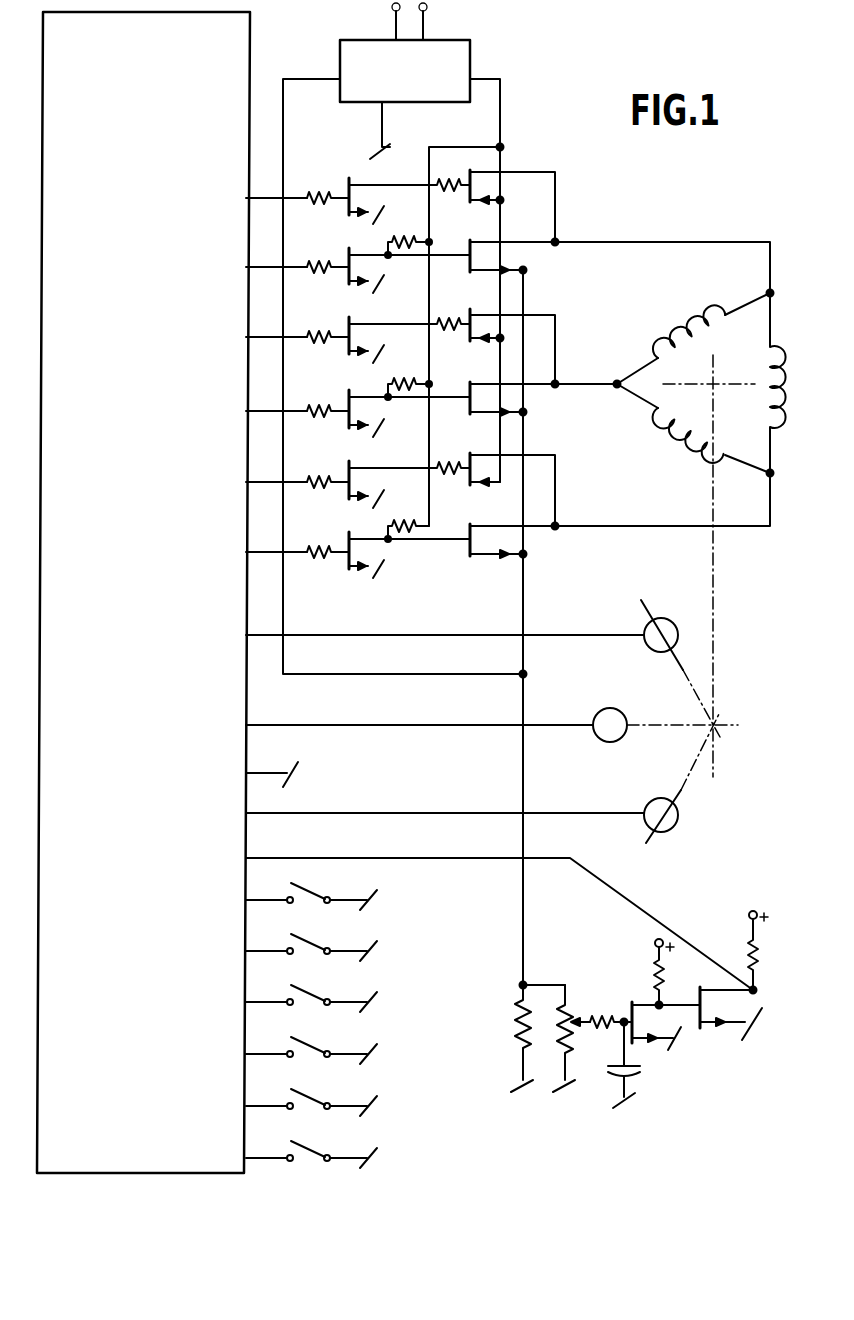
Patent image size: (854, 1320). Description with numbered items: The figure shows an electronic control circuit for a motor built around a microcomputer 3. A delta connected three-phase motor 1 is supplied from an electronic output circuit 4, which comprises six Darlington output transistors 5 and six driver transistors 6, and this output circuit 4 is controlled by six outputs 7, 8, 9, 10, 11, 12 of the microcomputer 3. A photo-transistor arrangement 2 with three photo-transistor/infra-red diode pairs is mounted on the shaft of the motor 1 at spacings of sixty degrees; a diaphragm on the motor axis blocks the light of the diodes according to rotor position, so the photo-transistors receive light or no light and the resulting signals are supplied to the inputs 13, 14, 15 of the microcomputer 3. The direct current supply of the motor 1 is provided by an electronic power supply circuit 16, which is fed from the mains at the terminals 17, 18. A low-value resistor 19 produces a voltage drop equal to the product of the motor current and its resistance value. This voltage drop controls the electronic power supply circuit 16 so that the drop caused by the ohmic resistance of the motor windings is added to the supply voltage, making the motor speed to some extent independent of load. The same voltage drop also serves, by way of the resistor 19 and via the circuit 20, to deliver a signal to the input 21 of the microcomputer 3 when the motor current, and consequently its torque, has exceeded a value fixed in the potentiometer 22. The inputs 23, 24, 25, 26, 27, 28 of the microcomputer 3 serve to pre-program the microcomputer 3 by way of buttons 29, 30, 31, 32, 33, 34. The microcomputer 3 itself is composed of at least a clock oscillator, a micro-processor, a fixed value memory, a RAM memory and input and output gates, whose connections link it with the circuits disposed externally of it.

The three-phase motor 1 is at (700, 534).
The photo-transistor arrangement 2 is at (665, 721).
The microcomputer 3 is at (238, 45).
The electronic output circuit 4 is at (405, 532).
The Darlington output transistors 5 is at (448, 463).
The driver transistors 6 is at (388, 371).
The output 7 is at (267, 198).
The output 8 is at (267, 267).
The output 9 is at (267, 337).
The output 10 is at (259, 411).
The output 11 is at (259, 482).
The output 12 is at (259, 552).
The input 13 is at (427, 635).
The input 14 is at (402, 725).
The input 15 is at (427, 813).
The electronic power supply circuit 16 is at (349, 45).
The terminal 17 is at (392, 8).
The terminal 18 is at (428, 8).
The low-value resistor 19 is at (505, 1030).
The circuit 20 is at (644, 1009).
The input 21 is at (482, 917).
The potentiometer 22 is at (556, 1015).
The input 23 is at (249, 900).
The input 24 is at (249, 951).
The input 25 is at (249, 1002).
The input 26 is at (249, 1054).
The input 27 is at (249, 1106).
The input 28 is at (249, 1158).
The button 29 is at (332, 887).
The button 30 is at (332, 938).
The button 31 is at (332, 989).
The button 32 is at (332, 1041).
The button 33 is at (332, 1093).
The button 34 is at (332, 1145).